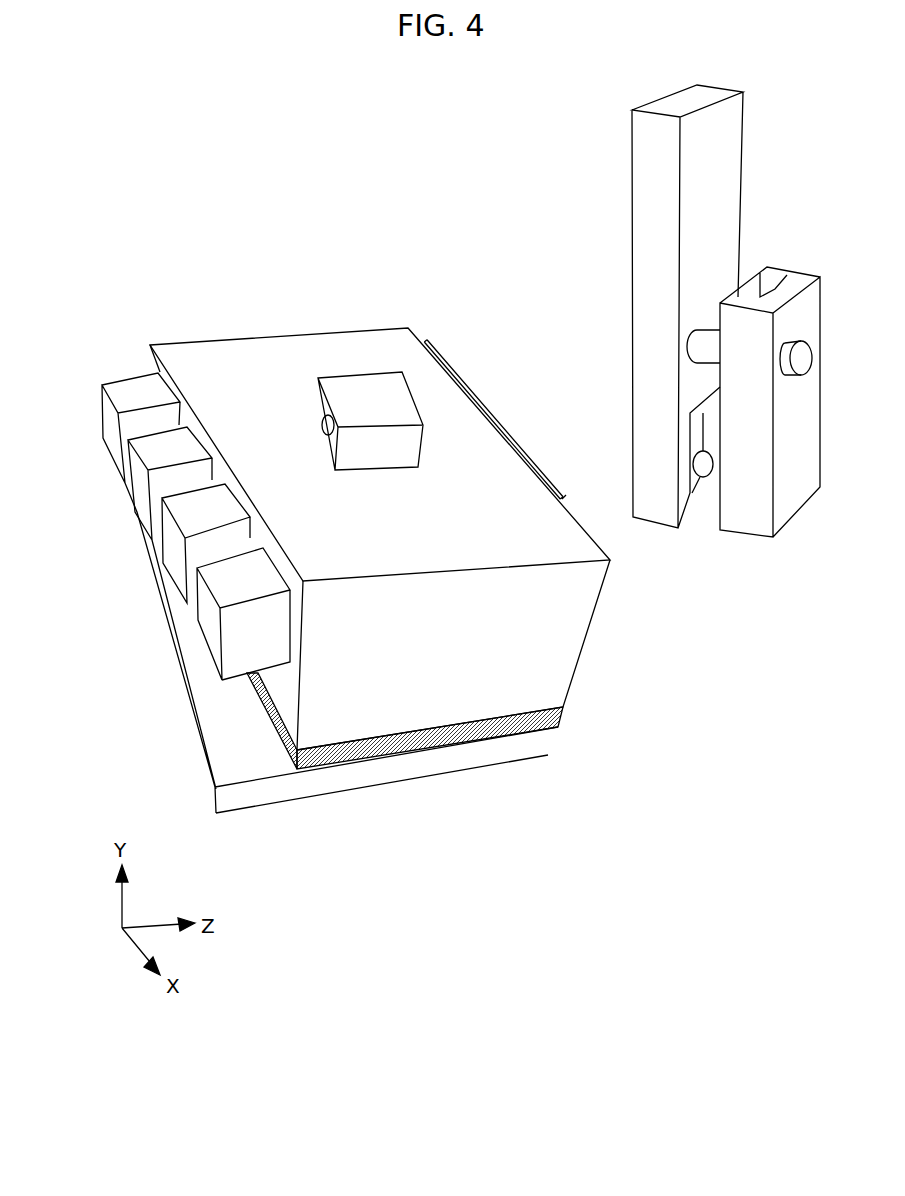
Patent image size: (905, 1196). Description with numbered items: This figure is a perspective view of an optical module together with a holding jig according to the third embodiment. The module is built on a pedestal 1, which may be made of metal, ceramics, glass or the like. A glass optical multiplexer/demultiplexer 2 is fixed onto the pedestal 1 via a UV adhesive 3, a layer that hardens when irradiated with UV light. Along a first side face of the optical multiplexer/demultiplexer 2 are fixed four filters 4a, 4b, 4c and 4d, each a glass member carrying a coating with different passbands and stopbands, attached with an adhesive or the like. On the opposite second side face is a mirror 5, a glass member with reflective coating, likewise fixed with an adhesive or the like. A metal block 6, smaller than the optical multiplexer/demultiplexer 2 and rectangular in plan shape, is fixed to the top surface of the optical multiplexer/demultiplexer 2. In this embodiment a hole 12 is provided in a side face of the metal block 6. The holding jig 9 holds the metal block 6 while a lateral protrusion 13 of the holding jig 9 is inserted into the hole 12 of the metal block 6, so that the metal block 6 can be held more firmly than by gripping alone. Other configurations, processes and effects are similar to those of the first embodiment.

The pedestal 1 is at (373, 770).
The optical multiplexer/demultiplexer 2 is at (562, 650).
The UV adhesive 3 is at (560, 718).
The filter 4a is at (207, 637).
The filter 4b is at (175, 562).
The filter 4c is at (142, 512).
The filter 4d is at (112, 448).
The mirror 5 is at (493, 415).
The metal block 6 is at (367, 390).
The holding jig 9 is at (715, 203).
The hole 12 is at (322, 425).
The lateral protrusion 13 is at (700, 483).